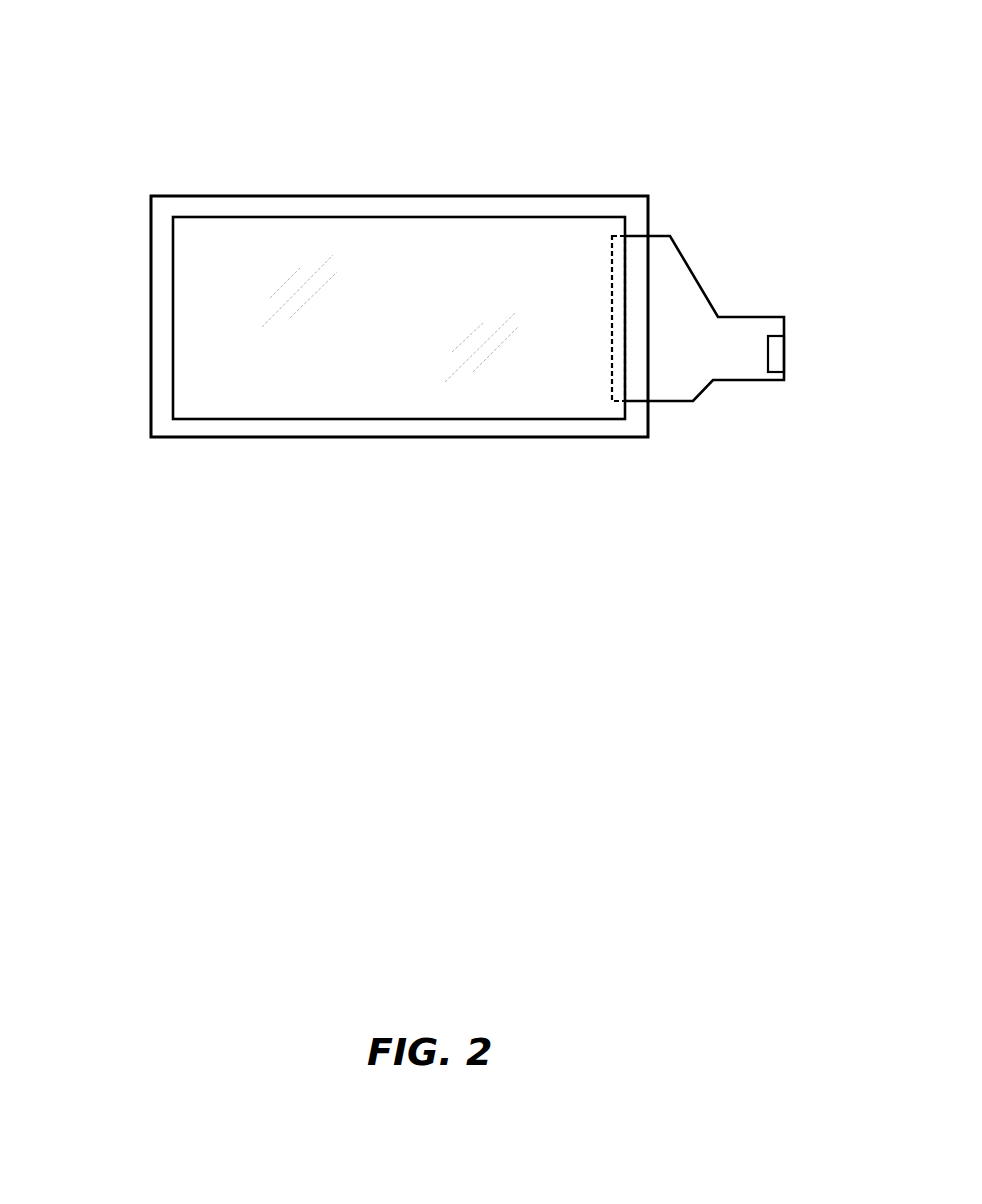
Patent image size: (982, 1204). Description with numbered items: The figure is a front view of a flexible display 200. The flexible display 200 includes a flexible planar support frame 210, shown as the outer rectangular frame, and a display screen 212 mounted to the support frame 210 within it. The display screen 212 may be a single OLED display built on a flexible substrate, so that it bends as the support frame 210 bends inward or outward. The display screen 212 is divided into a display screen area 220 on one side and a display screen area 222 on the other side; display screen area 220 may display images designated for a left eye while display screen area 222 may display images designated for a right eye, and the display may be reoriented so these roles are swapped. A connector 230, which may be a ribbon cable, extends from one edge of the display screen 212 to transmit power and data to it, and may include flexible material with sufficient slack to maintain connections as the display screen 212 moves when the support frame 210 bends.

The flexible display 200 is at (108, 70).
The flexible planar support frame 210 is at (525, 209).
The display screen 212 is at (413, 243).
The display screen area 220 is at (377, 463).
The display screen area 222 is at (601, 463).
The connector 230 is at (760, 317).